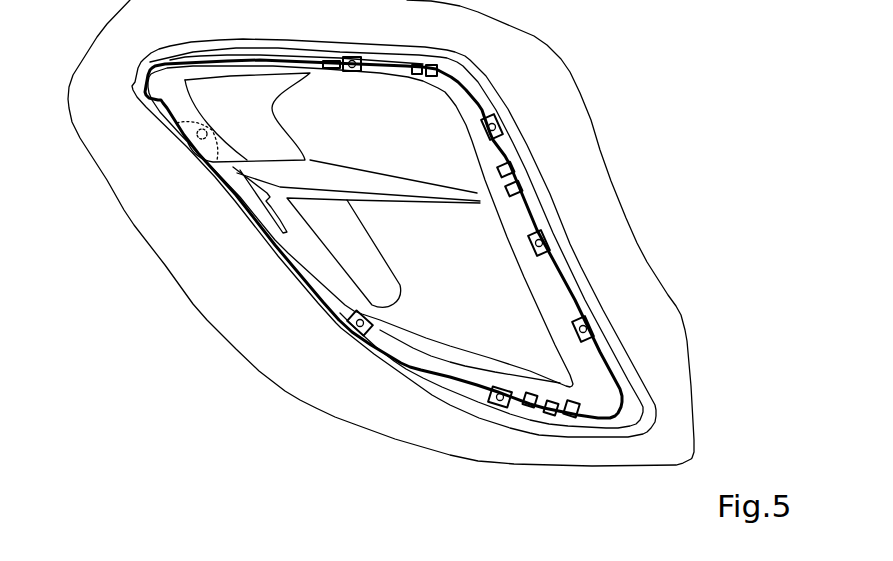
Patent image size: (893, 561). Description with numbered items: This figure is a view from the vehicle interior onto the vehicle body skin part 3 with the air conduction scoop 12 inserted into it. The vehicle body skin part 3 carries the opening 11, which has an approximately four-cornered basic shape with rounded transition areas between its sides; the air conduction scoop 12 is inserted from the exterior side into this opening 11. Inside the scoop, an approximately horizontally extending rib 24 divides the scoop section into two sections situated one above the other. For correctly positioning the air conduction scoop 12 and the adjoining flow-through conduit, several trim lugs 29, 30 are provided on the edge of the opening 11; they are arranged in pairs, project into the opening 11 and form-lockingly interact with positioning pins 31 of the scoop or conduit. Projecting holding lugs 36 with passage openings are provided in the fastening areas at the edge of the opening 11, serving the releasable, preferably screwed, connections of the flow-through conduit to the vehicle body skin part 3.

The vehicle body skin part 3 is at (381, 233).
The opening 11 is at (360, 226).
The air conduction scoop 12 is at (394, 236).
The rib 24 is at (328, 190).
The trim lug 29 is at (508, 267).
The trim lug 30 is at (383, 234).
The positioning pin 31 is at (436, 234).
The holding lug 36 is at (468, 232).